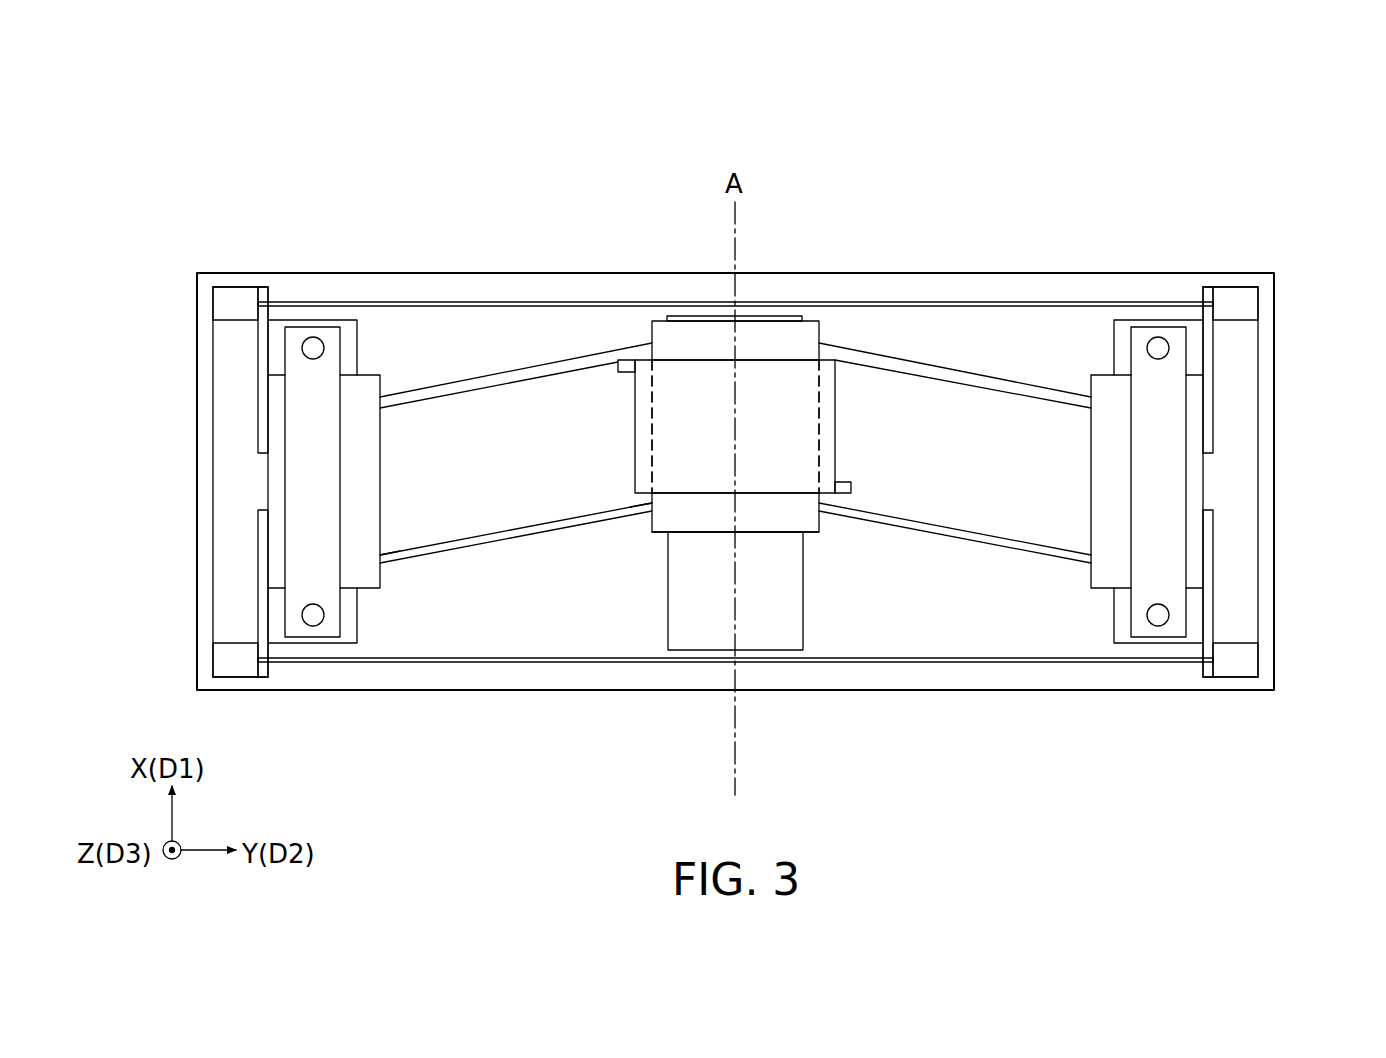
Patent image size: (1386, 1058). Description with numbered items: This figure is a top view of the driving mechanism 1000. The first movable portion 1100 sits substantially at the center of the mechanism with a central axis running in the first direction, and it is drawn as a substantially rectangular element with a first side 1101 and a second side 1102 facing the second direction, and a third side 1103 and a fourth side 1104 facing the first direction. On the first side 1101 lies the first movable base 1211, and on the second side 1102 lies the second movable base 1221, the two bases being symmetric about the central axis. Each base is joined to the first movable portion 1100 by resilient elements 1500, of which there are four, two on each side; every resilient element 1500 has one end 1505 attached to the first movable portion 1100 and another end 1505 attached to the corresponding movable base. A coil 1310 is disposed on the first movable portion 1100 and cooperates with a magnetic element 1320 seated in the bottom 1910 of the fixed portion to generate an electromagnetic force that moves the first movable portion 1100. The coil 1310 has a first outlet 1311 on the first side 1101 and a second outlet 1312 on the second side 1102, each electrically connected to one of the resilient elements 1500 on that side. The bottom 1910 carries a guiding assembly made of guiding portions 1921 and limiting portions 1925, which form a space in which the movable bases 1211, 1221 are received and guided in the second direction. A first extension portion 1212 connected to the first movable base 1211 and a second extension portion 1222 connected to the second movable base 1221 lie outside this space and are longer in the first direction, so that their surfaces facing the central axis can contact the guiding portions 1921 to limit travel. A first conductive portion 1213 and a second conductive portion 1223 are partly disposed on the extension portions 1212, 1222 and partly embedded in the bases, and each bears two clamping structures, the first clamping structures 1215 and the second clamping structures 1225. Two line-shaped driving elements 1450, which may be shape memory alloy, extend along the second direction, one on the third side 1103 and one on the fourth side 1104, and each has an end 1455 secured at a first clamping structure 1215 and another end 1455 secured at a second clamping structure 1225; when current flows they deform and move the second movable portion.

The driving mechanism 1000 is at (161, 129).
The first movable portion 1100 is at (697, 330).
The first side 1101 is at (820, 449).
The second side 1102 is at (651, 450).
The third side 1103 is at (783, 316).
The fourth side 1104 is at (769, 534).
The first movable base 1211 is at (1096, 386).
The first extension portion 1212 is at (1208, 613).
The first conductive portion 1213 is at (1248, 572).
The first clamping structure 1215 is at (1250, 304).
The second movable base 1221 is at (375, 386).
The second extension portion 1222 is at (262, 613).
The second conductive portion 1223 is at (222, 572).
The second clamping structure 1225 is at (220, 304).
The coil 1310 is at (803, 403).
The first outlet 1311 is at (852, 486).
The second outlet 1312 is at (620, 365).
The magnetic element 1320 is at (759, 620).
The driving element 1450 is at (857, 302).
The end 1455 is at (257, 302).
The resilient element 1500 is at (543, 372).
The end 1505 is at (400, 560).
The bottom 1910 is at (537, 618).
The guiding portion 1921 is at (355, 333).
The limiting portion 1925 is at (300, 482).